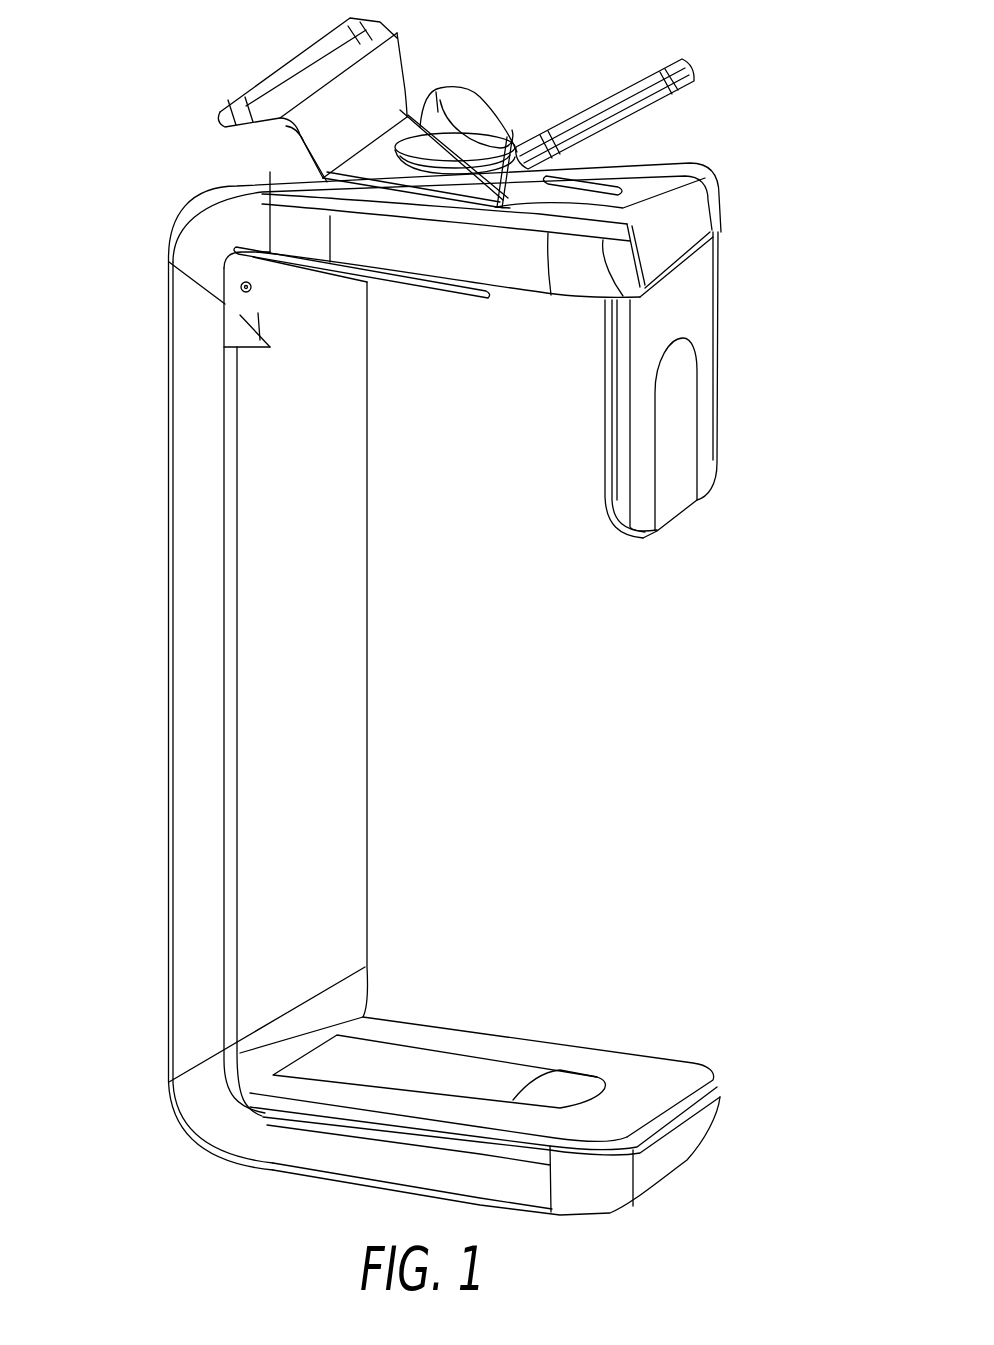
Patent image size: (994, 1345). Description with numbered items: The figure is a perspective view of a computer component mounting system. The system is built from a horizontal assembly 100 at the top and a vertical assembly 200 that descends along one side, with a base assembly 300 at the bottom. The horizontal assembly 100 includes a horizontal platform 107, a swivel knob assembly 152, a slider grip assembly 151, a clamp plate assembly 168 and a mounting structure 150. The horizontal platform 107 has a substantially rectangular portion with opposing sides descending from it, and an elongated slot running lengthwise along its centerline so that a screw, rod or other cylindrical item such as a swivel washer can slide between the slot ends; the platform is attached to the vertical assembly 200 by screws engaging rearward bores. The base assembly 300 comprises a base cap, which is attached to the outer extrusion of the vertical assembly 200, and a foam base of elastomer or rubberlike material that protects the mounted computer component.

The horizontal assembly 100 is at (700, 156).
The horizontal platform 107 is at (510, 260).
The mounting structure 150 is at (676, 57).
The slider grip assembly 151 is at (738, 287).
The swivel knob assembly 152 is at (497, 110).
The clamp plate assembly 168 is at (442, 298).
The vertical assembly 200 is at (150, 665).
The base assembly 300 is at (532, 1026).